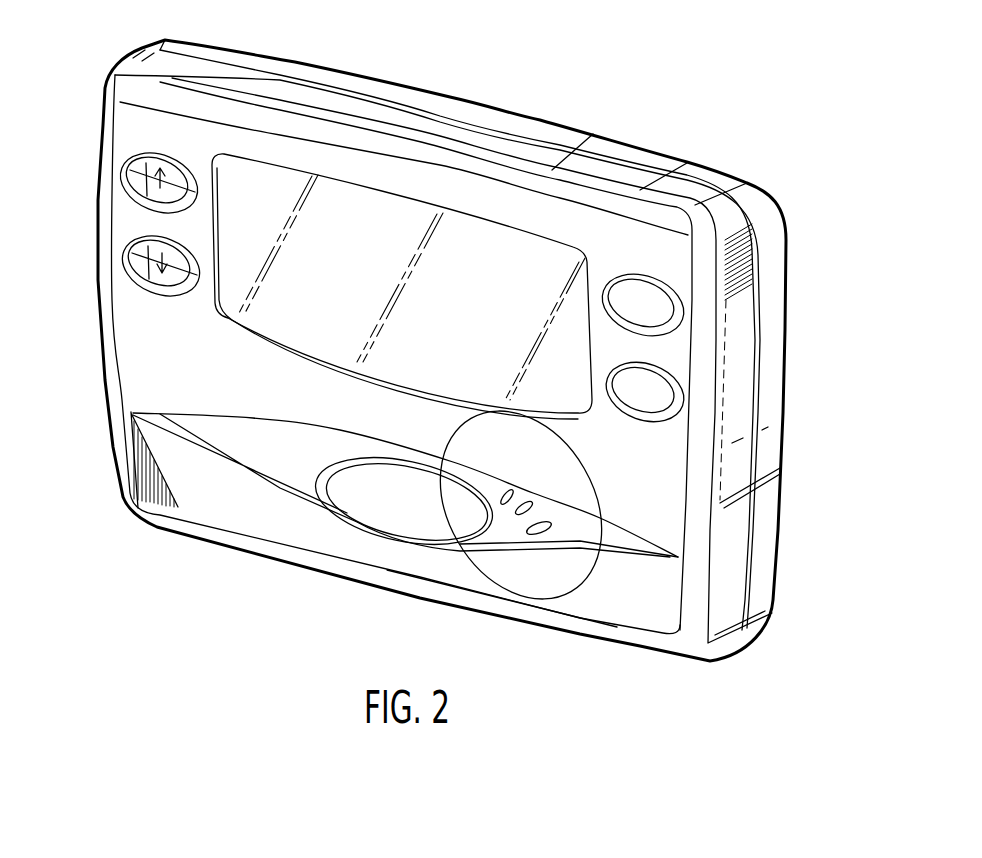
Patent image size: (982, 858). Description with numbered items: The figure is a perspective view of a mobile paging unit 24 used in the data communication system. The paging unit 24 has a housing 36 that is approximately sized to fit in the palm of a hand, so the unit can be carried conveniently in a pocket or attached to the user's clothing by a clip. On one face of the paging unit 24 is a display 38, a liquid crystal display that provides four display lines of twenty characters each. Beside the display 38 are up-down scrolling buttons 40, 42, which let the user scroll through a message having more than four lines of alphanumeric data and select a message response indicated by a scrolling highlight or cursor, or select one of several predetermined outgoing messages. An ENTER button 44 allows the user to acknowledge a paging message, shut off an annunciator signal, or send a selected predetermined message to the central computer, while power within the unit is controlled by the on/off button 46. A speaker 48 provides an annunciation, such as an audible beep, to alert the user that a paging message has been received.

The paging unit 24 is at (856, 358).
The housing 36 is at (543, 133).
The display 38 is at (253, 321).
The up scrolling button 40 is at (127, 183).
The down scrolling button 42 is at (130, 258).
The ENTER button 44 is at (683, 317).
The on/off button 46 is at (683, 403).
The speaker 48 is at (580, 490).